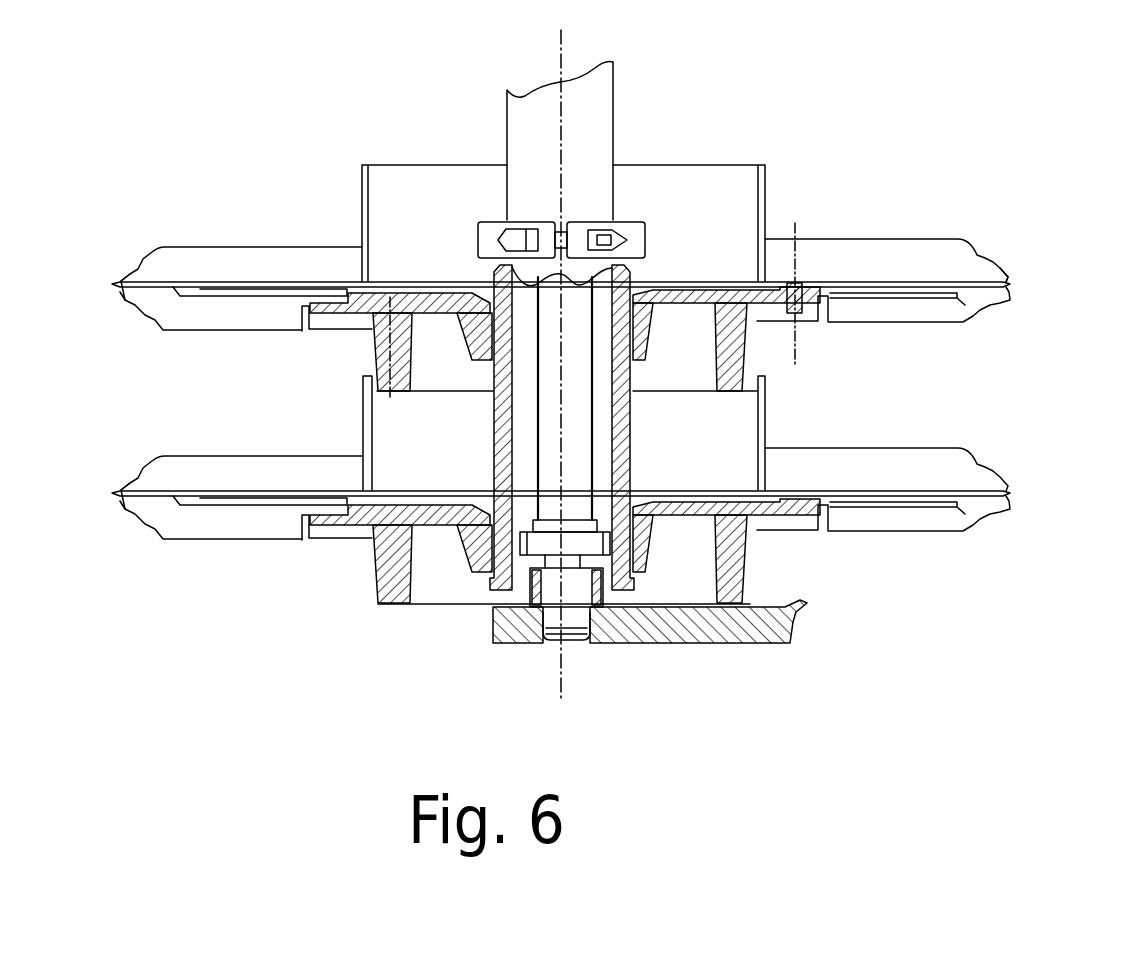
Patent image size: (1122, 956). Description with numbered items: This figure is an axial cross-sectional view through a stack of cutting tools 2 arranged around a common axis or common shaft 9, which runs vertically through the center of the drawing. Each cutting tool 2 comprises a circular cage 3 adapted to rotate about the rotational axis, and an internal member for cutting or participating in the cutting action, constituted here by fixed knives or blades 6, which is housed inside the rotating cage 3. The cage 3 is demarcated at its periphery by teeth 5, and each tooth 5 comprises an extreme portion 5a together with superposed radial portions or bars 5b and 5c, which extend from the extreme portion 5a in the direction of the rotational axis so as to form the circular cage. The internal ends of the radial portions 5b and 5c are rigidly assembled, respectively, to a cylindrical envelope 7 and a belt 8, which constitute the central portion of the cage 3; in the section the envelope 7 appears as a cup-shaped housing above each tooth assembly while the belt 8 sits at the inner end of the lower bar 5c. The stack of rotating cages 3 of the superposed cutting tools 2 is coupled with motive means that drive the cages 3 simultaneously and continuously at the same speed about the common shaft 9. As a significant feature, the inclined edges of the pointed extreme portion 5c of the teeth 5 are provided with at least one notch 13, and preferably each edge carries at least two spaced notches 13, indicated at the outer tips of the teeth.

The cutting tool 2 is at (565, 375).
The circular cage 3 is at (565, 386).
The teeth 5 is at (565, 388).
The extreme portion 5a is at (140, 268).
The radial portion 5b is at (313, 262).
The radial portion 5c is at (197, 315).
The fixed knives or blades 6 is at (240, 290).
The cylindrical envelope 7 is at (763, 195).
The belt 8 is at (828, 307).
The common shaft 9 is at (600, 118).
The notch 13 is at (153, 322).